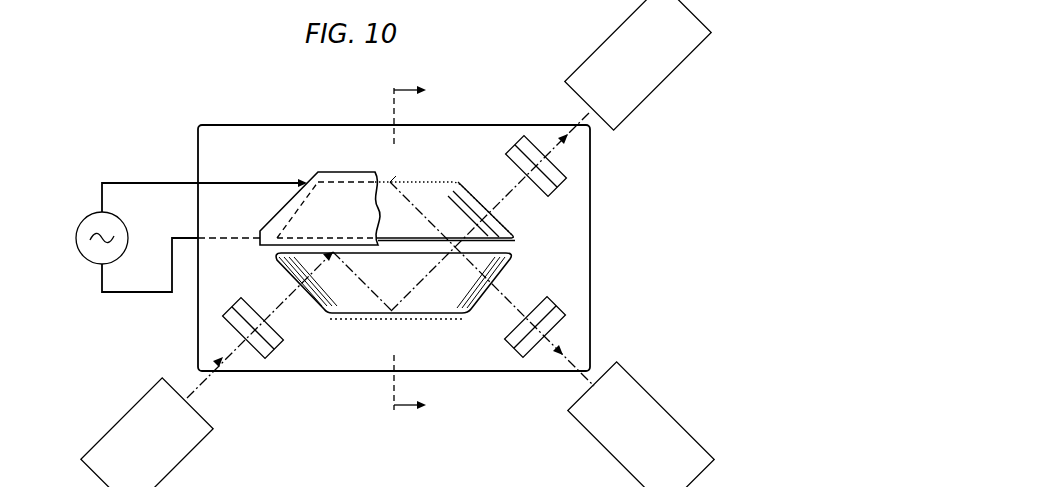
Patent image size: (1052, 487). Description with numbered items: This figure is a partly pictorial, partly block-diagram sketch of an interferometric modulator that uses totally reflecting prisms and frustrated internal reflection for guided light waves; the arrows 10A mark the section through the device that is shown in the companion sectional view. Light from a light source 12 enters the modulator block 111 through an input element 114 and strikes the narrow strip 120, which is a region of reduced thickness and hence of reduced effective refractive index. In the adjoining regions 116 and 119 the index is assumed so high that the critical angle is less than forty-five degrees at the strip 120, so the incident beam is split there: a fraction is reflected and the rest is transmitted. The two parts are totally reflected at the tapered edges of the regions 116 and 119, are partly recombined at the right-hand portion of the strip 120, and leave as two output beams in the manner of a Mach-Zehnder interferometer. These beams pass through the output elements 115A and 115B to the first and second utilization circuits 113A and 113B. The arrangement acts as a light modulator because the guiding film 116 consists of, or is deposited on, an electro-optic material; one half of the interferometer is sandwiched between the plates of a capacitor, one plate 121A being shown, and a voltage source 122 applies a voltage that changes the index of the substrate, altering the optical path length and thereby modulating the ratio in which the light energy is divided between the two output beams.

The section line 10A- 10A is at (428, 249).
The light source 12 is at (105, 430).
The housing / enclosure 111 is at (250, 134).
The utilization circuit 1 113A is at (648, 94).
The utilization circuit 2 113B is at (645, 388).
The input polarizer 114 is at (283, 338).
The output polarizer (analyzer) A 115A is at (566, 182).
The output polarizer (analyzer) B 115B is at (552, 287).
The guiding film region 116 is at (457, 192).
The high-index region 119 is at (467, 302).
The narrow strip region 120 is at (510, 243).
The capacitor plate 121A is at (342, 171).
The AC voltage source 122 is at (78, 225).